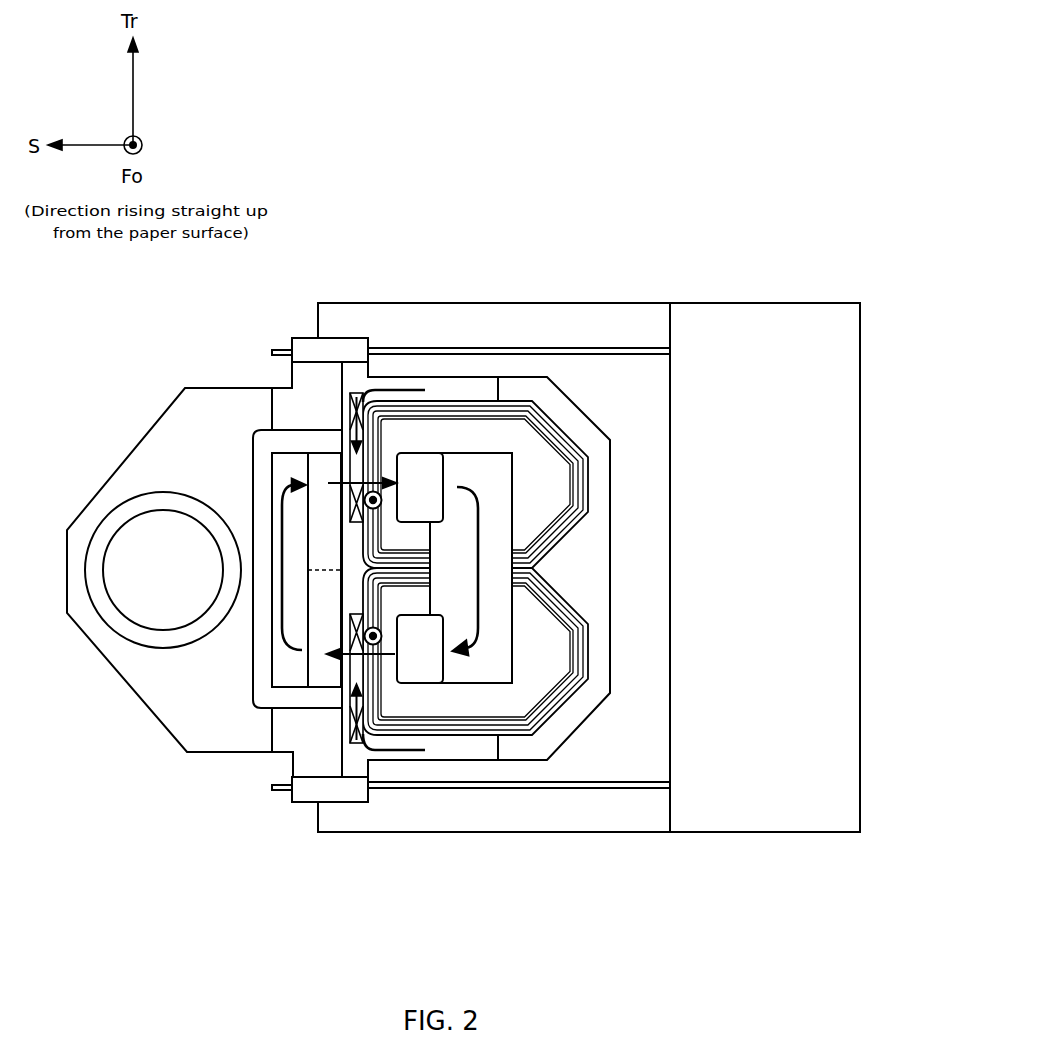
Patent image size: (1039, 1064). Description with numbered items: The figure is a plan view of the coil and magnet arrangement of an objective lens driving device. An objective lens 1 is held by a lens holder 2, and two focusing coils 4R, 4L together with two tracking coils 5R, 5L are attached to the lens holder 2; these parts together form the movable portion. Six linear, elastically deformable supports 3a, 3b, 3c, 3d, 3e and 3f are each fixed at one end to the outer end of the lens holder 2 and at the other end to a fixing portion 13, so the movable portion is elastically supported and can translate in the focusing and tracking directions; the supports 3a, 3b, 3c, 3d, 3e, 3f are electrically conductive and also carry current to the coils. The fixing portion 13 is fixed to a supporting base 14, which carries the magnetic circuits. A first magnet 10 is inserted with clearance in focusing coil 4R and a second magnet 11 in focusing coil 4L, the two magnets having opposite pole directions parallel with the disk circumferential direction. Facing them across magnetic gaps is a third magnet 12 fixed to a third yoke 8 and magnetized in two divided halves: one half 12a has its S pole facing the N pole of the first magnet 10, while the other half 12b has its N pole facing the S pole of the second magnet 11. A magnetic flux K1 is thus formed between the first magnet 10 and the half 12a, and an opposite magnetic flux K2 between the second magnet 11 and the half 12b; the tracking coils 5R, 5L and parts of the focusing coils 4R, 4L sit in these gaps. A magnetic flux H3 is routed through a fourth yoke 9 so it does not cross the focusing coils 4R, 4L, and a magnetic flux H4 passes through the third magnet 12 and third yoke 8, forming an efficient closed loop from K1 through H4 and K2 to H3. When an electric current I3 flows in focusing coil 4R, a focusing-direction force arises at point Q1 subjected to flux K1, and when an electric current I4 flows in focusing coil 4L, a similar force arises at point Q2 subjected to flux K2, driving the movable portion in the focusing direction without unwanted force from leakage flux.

The objective lens 1 is at (138, 598).
The lens holder 2 is at (163, 692).
The support 3a is at (519, 868).
The support 3b is at (519, 868).
The support 3c is at (557, 790).
The support 3d is at (519, 271).
The support 3e is at (519, 271).
The support 3f is at (547, 348).
The focusing coil 4L is at (563, 437).
The focusing coil 4R is at (587, 653).
The tracking coil 5L is at (352, 392).
The tracking coil 5R is at (355, 745).
The third yoke 8 is at (283, 662).
The fourth yoke 9 is at (497, 668).
The first magnet 10 is at (446, 768).
The second magnet 11 is at (447, 379).
The third magnet 12 is at (308, 665).
The one half of third magnet 12a is at (308, 690).
The other half of third magnet 12b is at (317, 472).
The fixing portion 13 is at (757, 812).
The supporting base 14 is at (593, 812).
The point Q1 is at (408, 657).
The point Q2 is at (395, 477).
The magnetic flux K1 is at (383, 652).
The magnetic flux K2 is at (332, 477).
The magnetic flux H3 is at (478, 517).
The magnetic flux H4 is at (278, 530).
The electric current I3 is at (385, 753).
The electric current I4 is at (403, 390).